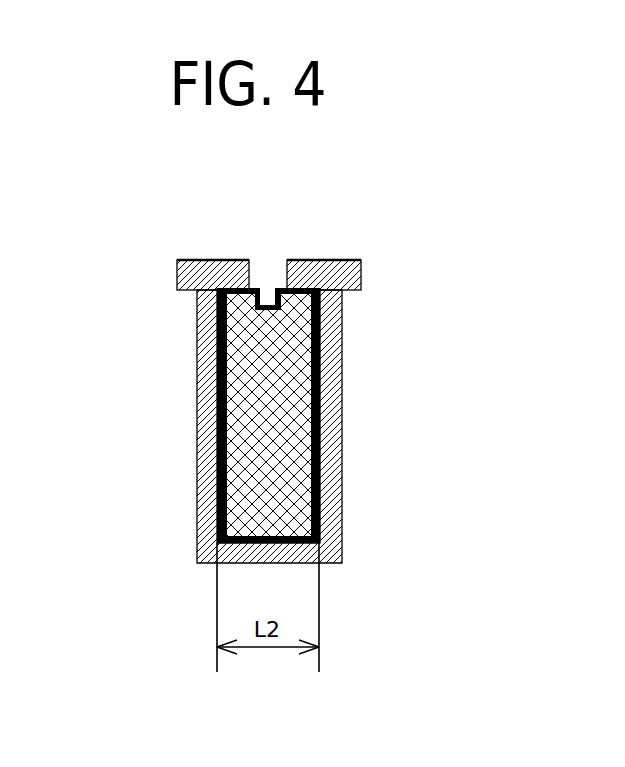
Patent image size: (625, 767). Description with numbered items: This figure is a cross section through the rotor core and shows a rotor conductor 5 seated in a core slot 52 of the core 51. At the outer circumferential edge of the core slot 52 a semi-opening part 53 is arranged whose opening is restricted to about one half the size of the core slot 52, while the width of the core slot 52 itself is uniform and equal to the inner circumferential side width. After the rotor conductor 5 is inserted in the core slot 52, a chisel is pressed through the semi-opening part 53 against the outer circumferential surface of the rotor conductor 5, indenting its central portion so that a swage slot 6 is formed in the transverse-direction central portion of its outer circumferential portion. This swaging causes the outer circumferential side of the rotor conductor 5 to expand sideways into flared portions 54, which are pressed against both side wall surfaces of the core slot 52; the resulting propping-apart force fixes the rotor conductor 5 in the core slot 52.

The rotor conductor 5 is at (250, 455).
The swage slot 6 is at (272, 304).
The core 51 is at (342, 273).
The core slot 52 is at (322, 452).
The semi-opening part 53 is at (253, 267).
The flared portion 54 is at (223, 302).